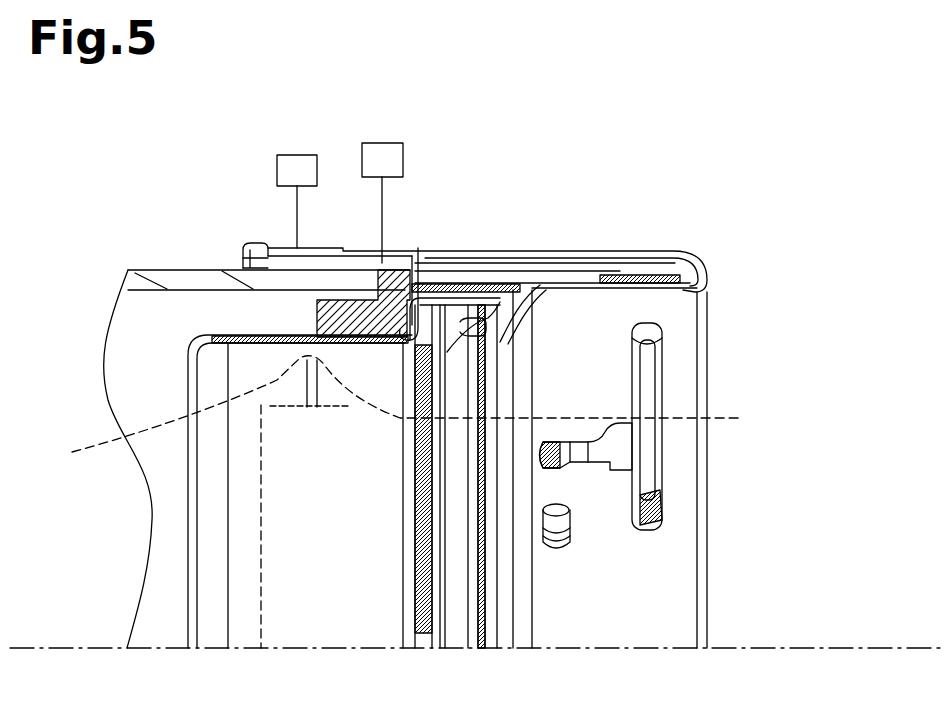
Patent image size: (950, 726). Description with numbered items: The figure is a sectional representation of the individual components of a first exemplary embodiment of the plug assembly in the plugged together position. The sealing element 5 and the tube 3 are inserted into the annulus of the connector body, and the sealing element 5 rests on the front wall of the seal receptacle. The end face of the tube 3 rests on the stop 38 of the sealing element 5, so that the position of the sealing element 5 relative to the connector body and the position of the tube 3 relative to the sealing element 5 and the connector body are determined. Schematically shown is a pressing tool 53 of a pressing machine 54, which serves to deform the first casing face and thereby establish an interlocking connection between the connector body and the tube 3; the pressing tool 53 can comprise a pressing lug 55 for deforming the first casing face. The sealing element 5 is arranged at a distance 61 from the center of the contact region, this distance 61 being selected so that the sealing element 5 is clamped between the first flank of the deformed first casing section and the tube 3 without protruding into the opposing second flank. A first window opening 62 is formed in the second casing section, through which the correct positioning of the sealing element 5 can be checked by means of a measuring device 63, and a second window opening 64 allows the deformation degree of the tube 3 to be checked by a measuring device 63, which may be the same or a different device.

The tube 3 is at (167, 278).
The sealing element 5 is at (356, 313).
The stop 38 is at (430, 258).
The pressing tool 53 is at (740, 648).
The pressing machine 54 is at (790, 452).
The pressing lug 55 is at (390, 412).
The distance 61 is at (313, 408).
The first window opening 62 is at (403, 237).
The measuring device 63 is at (302, 160).
The second window opening 64 is at (262, 243).